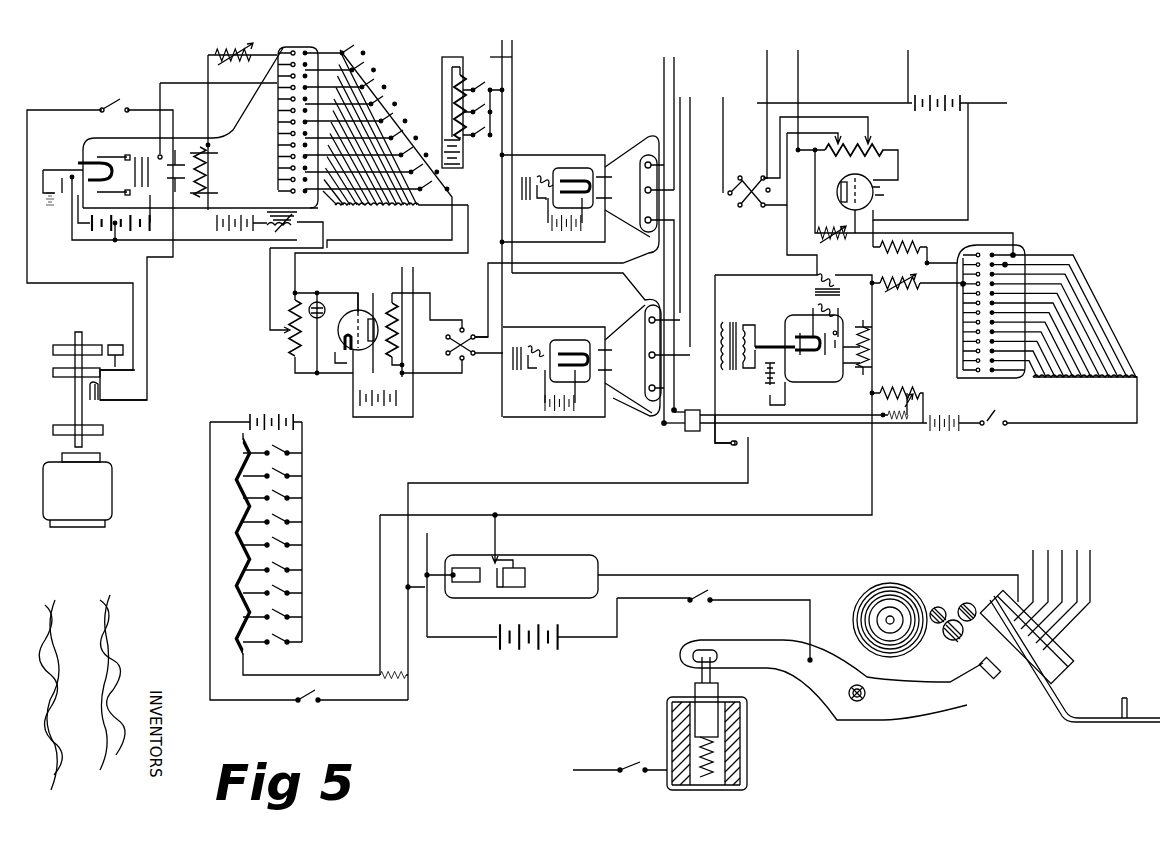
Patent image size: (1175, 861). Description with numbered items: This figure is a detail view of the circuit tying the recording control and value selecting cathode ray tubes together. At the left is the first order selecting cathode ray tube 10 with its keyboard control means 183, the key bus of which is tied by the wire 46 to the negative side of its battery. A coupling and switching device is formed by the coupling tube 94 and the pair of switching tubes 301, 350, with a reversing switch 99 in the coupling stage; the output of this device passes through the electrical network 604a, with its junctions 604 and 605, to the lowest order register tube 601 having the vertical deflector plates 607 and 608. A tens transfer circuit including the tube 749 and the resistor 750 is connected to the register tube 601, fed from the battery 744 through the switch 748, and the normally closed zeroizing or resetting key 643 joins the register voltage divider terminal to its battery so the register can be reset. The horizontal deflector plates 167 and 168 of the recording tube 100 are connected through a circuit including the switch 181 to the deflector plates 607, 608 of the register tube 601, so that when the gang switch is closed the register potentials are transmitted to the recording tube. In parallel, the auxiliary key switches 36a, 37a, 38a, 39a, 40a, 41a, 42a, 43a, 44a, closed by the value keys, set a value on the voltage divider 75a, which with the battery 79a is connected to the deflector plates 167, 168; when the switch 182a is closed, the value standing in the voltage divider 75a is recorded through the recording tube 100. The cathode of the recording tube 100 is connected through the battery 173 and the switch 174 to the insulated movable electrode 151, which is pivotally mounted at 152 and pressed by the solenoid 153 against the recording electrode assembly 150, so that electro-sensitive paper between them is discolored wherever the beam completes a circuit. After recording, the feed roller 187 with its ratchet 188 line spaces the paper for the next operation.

The cathode ray tube 10 is at (85, 147).
The wire 46 is at (230, 243).
The keyboard control means 183 is at (400, 103).
The switching tube 350 is at (605, 160).
The switching tube 301 is at (632, 387).
The junction 604 is at (665, 426).
The electrical network 604a is at (705, 430).
The junction 605 is at (675, 410).
The switch 181 is at (752, 446).
The coupling tube 94 is at (352, 312).
The reversing switch 99 is at (462, 360).
The battery 744 is at (924, 90).
The resistor 750 is at (880, 143).
The tube 749 is at (880, 198).
The reversing switch 748 is at (742, 207).
The register tube 601 is at (790, 318).
The deflector plate 608 is at (870, 333).
The deflector plate 607 is at (862, 380).
The zeroizing or resetting key 643 is at (995, 427).
The battery 79a is at (252, 412).
The voltage divider 75a is at (243, 585).
The auxiliary key switch 44a is at (282, 452).
The auxiliary key switch 43a is at (282, 474).
The auxiliary key switch 42a is at (282, 496).
The auxiliary key switch 41a is at (282, 520).
The auxiliary key switch 40a is at (282, 543).
The auxiliary key switch 39a is at (282, 568).
The auxiliary key switch 38a is at (282, 591).
The auxiliary key switch 37a is at (282, 615).
The auxiliary key switch 36a is at (282, 639).
The switch 182a is at (312, 705).
The recording tube 100 is at (590, 552).
The horizontal deflector plate 167 is at (518, 568).
The horizontal deflector plate 168 is at (497, 558).
The battery 173 is at (513, 650).
The switch 174 is at (708, 600).
The solenoid 153 is at (667, 726).
The pivot 152 is at (868, 696).
The movable electrode 151 is at (988, 675).
The recording electrode assembly 150 is at (1003, 612).
The feed roller 187 is at (950, 600).
The ratchet 188 is at (953, 640).